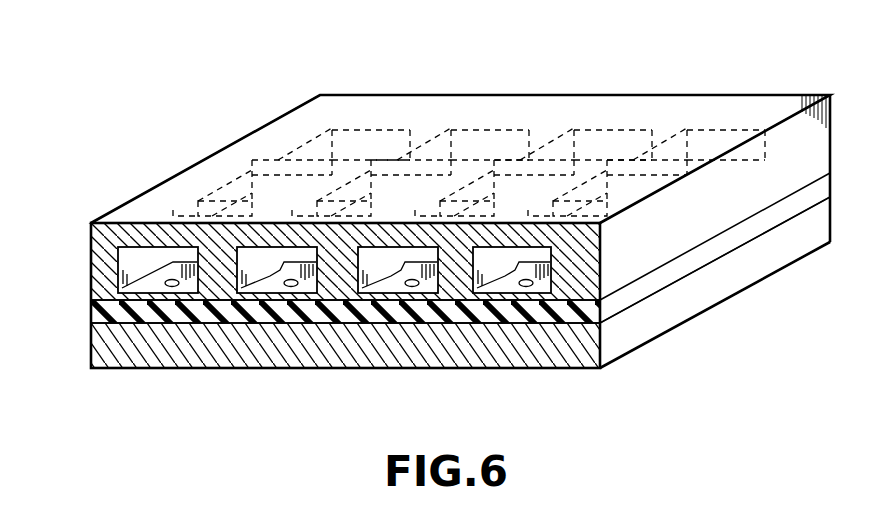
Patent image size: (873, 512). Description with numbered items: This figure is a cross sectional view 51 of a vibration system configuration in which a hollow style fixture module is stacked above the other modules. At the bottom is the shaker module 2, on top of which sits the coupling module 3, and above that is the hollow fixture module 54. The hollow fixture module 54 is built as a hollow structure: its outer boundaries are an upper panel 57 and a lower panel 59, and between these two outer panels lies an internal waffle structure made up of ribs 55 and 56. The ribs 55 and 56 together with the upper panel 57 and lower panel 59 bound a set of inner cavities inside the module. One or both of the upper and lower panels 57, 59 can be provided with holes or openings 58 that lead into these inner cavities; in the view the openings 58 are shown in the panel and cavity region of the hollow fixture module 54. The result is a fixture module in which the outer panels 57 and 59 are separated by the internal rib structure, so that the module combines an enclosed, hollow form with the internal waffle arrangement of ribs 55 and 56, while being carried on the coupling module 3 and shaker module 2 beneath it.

The cross sectional view 51 is at (197, 132).
The hollow fixture module 54 is at (781, 168).
The upper panel 57 is at (445, 108).
The rib 56 is at (422, 256).
The holes or openings 58 is at (533, 258).
The lower panel 59 is at (153, 283).
The rib 55 is at (133, 262).
The coupling module 3 is at (757, 230).
The shaker module 2 is at (673, 300).